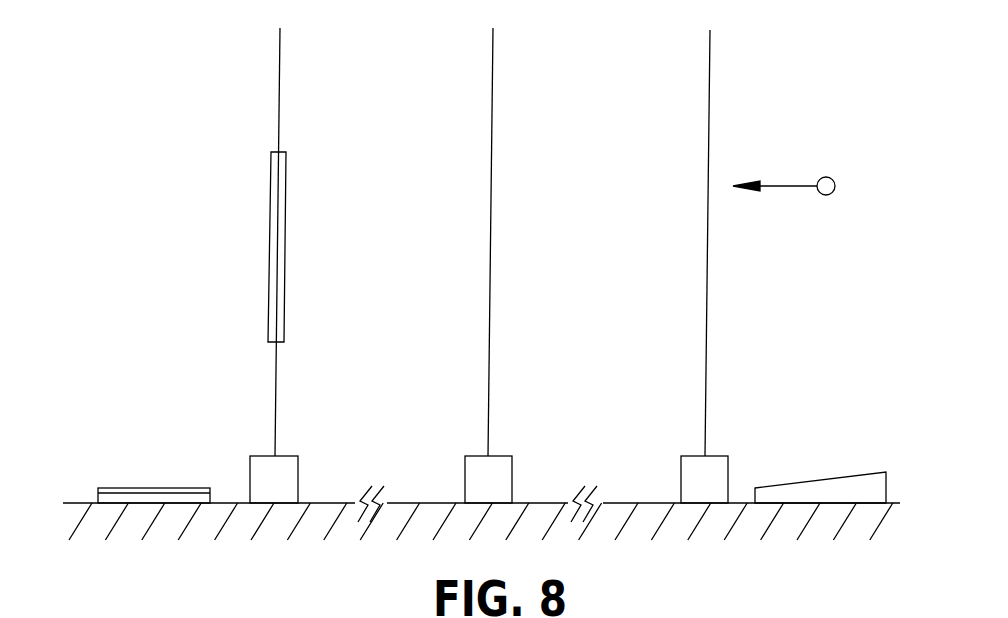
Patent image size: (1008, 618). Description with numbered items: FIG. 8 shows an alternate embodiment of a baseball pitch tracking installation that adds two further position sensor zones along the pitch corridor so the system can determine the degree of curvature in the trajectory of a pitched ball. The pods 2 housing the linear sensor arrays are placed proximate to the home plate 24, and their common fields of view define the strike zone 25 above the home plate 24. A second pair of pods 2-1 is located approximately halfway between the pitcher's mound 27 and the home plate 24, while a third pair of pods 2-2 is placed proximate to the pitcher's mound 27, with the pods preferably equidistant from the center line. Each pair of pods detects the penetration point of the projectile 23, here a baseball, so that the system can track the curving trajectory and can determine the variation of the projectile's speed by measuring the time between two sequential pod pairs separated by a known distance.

The pod 2 is at (273, 478).
The pair of pods 2-1 is at (487, 478).
The pair of pods 2-2 is at (705, 478).
The projectile 23 is at (826, 176).
The home plate 24 is at (157, 488).
The strike zone 25 is at (268, 223).
The pitcher's mound 27 is at (814, 477).